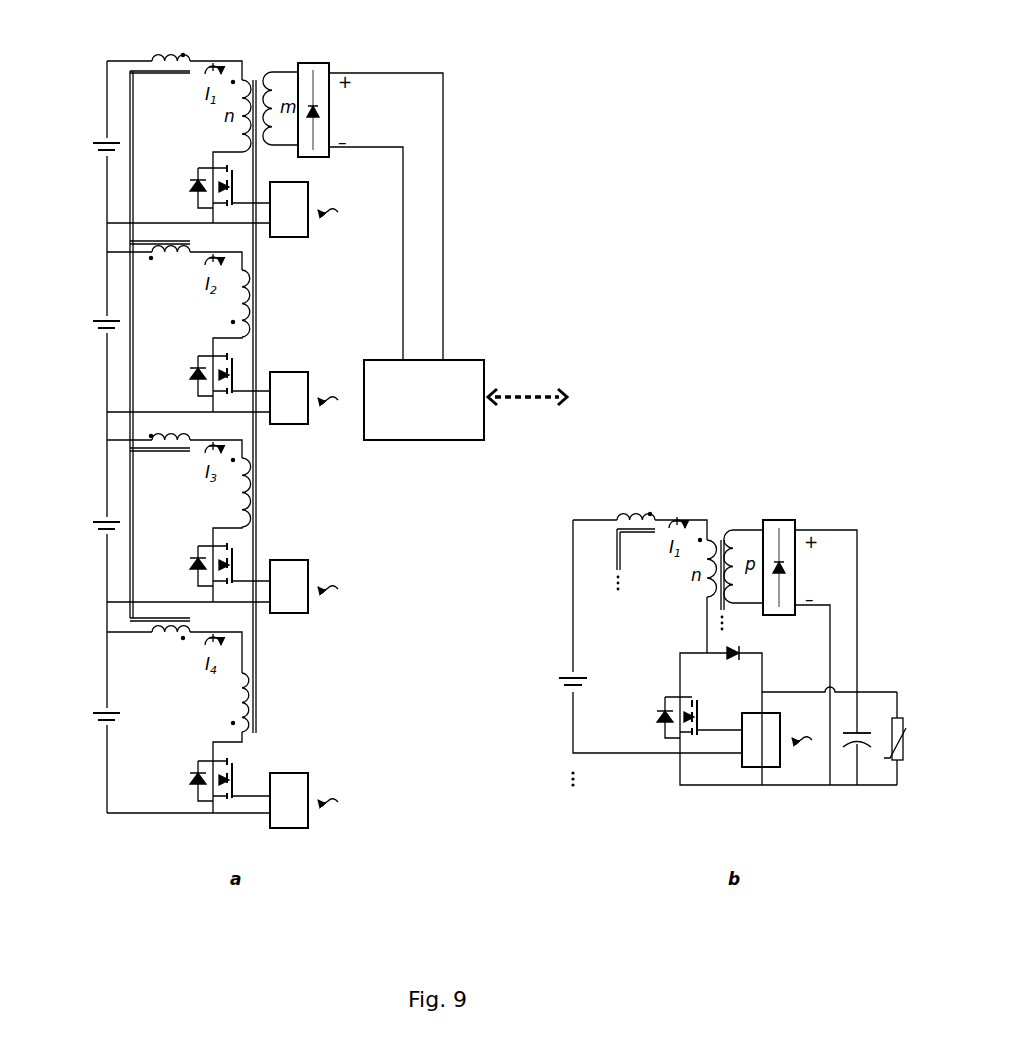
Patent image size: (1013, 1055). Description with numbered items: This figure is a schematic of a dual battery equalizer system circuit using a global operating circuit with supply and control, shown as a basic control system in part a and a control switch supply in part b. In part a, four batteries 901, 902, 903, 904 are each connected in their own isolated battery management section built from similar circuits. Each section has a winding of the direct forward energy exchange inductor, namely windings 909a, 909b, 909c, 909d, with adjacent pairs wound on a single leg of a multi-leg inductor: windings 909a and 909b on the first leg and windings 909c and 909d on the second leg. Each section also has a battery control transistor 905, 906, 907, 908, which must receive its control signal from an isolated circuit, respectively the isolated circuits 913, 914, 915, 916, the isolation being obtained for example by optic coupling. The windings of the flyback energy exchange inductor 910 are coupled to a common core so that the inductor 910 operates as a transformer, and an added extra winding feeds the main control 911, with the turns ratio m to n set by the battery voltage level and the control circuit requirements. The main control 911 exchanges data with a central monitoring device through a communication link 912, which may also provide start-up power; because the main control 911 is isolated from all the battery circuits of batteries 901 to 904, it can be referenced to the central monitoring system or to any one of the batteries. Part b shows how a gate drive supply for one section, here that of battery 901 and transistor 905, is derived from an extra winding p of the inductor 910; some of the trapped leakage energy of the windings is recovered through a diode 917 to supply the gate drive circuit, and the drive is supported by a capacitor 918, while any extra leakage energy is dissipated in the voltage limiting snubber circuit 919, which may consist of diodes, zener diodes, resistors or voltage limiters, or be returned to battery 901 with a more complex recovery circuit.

The battery 901 is at (86, 143).
The battery 902 is at (86, 321).
The battery 903 is at (86, 522).
The battery 904 is at (86, 713).
The battery control transistor 905 is at (199, 160).
The battery control transistor 906 is at (199, 348).
The battery control transistor 907 is at (199, 538).
The battery control transistor 908 is at (199, 753).
The direct forward energy exchange inductor winding 909a is at (177, 26).
The direct forward energy exchange inductor winding 909b is at (157, 233).
The direct forward energy exchange inductor winding 909c is at (157, 425).
The direct forward energy exchange inductor winding 909d is at (157, 613).
The flyback energy exchange inductor 910 is at (256, 58).
The main control 911 is at (381, 339).
The communication link 912 is at (523, 365).
The isolated circuit 913 is at (297, 241).
The isolated circuit 914 is at (297, 427).
The isolated circuit 915 is at (297, 616).
The isolated circuit 916 is at (297, 771).
The diode 917 is at (728, 660).
The capacitor 918 is at (846, 722).
The voltage limiting snubber circuit 919 is at (887, 718).